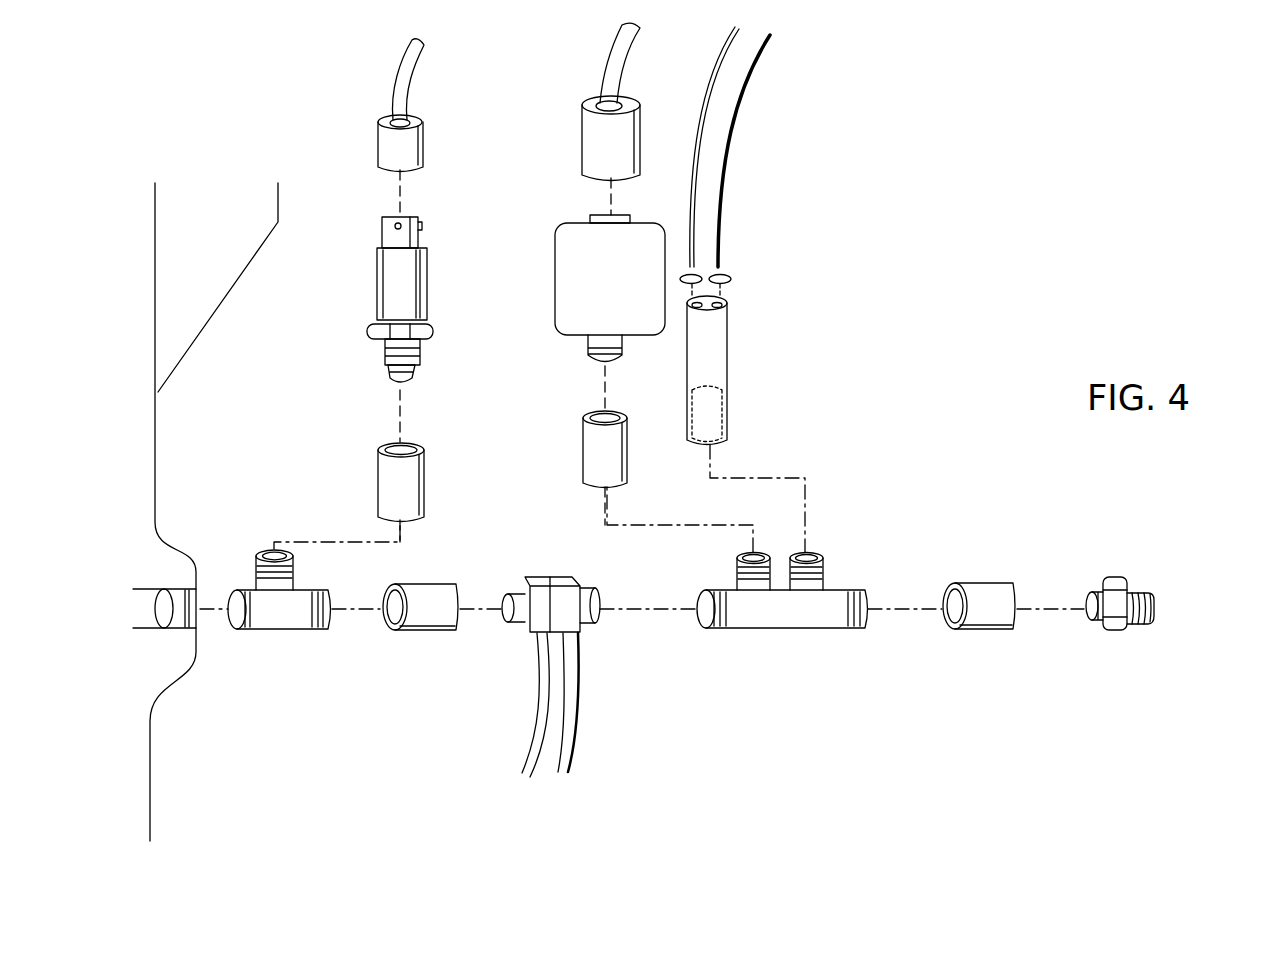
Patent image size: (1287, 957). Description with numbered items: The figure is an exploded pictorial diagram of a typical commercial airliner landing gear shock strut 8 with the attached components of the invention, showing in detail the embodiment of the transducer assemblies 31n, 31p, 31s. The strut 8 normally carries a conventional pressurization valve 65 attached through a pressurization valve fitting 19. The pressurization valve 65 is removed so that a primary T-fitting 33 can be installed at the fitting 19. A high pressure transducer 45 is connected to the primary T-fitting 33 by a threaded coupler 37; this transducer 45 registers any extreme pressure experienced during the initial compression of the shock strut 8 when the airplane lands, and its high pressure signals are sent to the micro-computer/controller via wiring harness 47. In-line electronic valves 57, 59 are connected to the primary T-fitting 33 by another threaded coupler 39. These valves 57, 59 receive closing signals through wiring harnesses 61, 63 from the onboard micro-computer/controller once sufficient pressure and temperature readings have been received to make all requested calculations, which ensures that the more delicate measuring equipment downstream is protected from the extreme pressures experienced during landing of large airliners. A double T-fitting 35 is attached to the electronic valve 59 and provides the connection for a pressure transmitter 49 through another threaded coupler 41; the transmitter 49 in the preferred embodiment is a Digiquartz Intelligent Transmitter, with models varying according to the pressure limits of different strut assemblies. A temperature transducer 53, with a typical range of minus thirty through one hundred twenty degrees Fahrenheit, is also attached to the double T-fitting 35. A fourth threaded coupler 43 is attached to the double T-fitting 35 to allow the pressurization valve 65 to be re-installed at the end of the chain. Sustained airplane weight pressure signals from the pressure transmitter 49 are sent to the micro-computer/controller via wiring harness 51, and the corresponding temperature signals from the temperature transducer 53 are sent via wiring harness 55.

The landing gear strut 8 is at (137, 441).
The pressurization valve fitting 19 is at (200, 611).
The transducer assembly 31n is at (1007, 178).
The transducer assembly 31p is at (1007, 178).
The transducer assembly 31s is at (1090, 135).
The primary T-fitting 33 is at (283, 631).
The double T-fitting 35 is at (757, 630).
The threaded coupler 37 is at (427, 482).
The threaded coupler 39 is at (415, 632).
The threaded coupler 41 is at (583, 447).
The fourth threaded coupler 43 is at (1000, 632).
The high pressure transducer 45 is at (377, 278).
The wiring harness 47 is at (423, 152).
The pressure transmitter 49 is at (555, 280).
The wiring harness 51 is at (605, 62).
The temperature transducer 53 is at (730, 412).
The wiring harness 55 is at (693, 167).
The in-line electronic valve 57 is at (535, 577).
The in-line electronic valve 59 is at (562, 577).
The wiring harness 61 is at (525, 778).
The wiring harness 63 is at (565, 778).
The pressurization valve 65 is at (1155, 602).